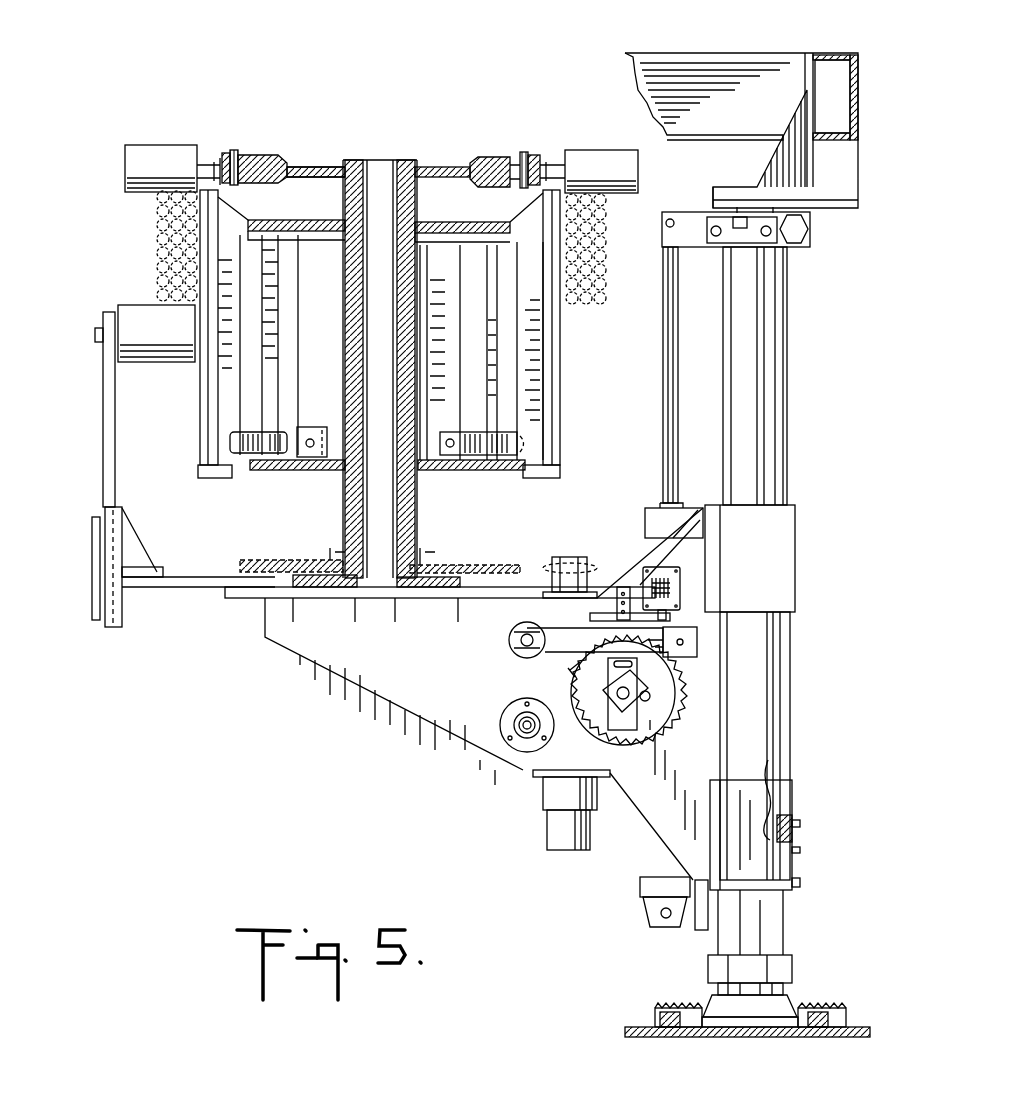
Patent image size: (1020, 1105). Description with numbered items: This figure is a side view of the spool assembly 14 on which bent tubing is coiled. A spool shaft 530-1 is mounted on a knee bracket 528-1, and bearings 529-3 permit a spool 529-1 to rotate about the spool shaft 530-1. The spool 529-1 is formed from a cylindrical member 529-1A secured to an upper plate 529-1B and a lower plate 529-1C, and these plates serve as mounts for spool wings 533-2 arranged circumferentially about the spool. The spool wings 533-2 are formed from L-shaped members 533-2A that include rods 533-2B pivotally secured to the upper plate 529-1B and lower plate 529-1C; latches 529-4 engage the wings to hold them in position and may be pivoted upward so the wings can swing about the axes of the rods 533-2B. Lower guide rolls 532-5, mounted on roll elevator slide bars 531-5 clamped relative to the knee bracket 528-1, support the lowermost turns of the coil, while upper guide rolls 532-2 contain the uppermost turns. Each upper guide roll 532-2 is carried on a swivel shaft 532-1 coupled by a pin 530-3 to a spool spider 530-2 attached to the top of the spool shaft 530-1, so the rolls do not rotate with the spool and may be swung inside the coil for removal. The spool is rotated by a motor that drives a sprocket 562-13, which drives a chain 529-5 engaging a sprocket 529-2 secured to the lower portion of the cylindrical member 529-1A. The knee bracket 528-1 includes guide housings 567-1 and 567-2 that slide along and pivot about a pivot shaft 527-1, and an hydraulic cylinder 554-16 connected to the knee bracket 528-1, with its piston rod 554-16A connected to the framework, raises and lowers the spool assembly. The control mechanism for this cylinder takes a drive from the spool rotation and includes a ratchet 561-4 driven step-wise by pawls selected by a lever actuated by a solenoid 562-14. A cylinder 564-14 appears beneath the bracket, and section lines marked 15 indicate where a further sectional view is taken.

The spool assembly 14 is at (404, 62).
The pin 530-3 is at (233, 147).
The swivel shaft 532-1 is at (203, 147).
The spool spider 530-2 is at (263, 150).
The upper plate 529-1B is at (320, 220).
The bearings 529-3 is at (428, 183).
The rods 533-2B is at (492, 157).
The upper guide rolls 532-2 is at (132, 155).
The lower guide rolls 532-5 is at (135, 312).
The roll elevator slide bars 531-5 is at (102, 393).
The cylindrical member 529-1A is at (340, 352).
The lower plate 529-1C is at (327, 423).
The latches 529-4 is at (230, 437).
The spool 529-1 is at (322, 478).
The sprocket 529-2 is at (272, 562).
The chain 529-5 is at (533, 563).
The sprocket 562-13 is at (570, 555).
The section line 15- 15 is at (622, 520).
The spool wings 533-2 is at (570, 327).
The spool shaft 530-1 is at (347, 352).
The L-shaped members 533-2A is at (563, 383).
The piston rod 554-16A is at (673, 293).
The hydraulic cylinder 554-16 is at (683, 510).
The pivot shaft 527-1 is at (778, 455).
The solenoid 562-14 is at (673, 570).
The guide housing 567-2 is at (780, 570).
The knee bracket 528-1 is at (293, 640).
The ratchet 561-4 is at (600, 714).
The cylinder 564-14 is at (553, 840).
The guide housing 567-1 is at (768, 860).